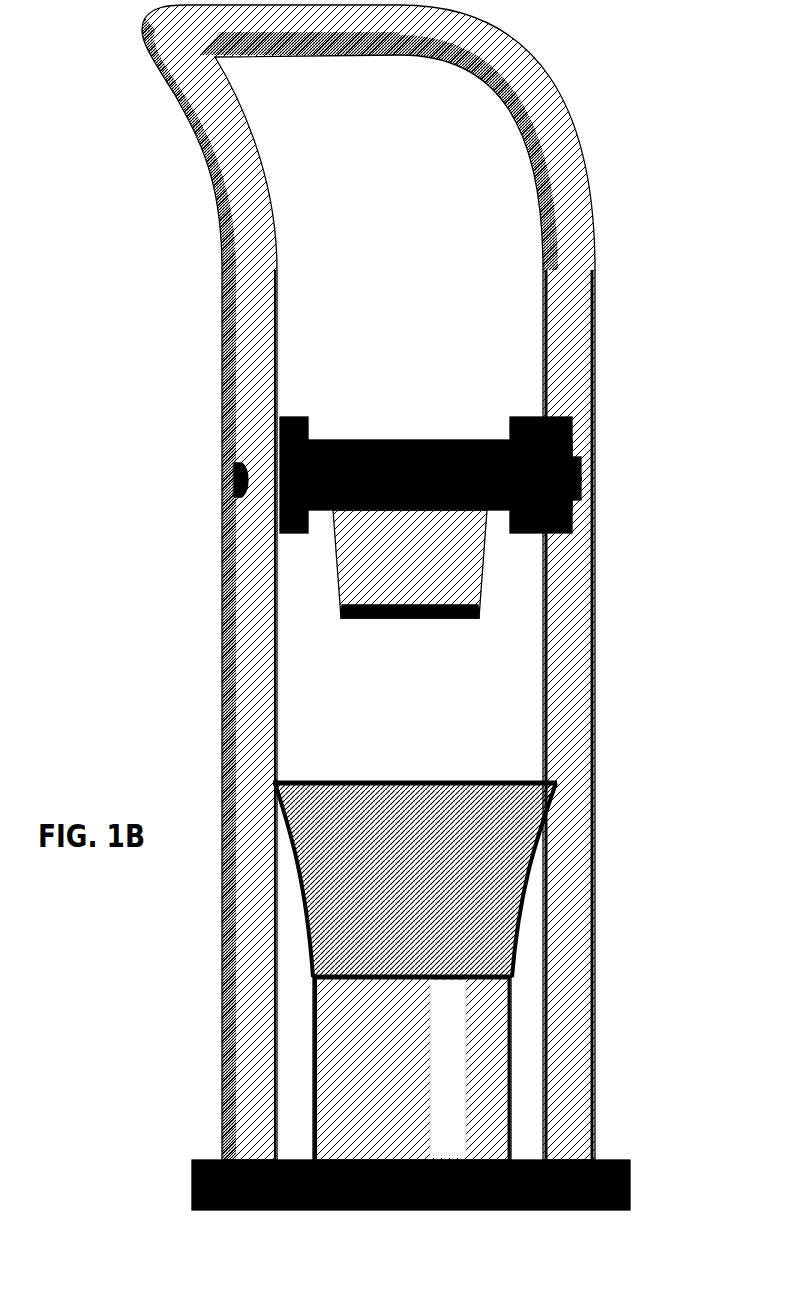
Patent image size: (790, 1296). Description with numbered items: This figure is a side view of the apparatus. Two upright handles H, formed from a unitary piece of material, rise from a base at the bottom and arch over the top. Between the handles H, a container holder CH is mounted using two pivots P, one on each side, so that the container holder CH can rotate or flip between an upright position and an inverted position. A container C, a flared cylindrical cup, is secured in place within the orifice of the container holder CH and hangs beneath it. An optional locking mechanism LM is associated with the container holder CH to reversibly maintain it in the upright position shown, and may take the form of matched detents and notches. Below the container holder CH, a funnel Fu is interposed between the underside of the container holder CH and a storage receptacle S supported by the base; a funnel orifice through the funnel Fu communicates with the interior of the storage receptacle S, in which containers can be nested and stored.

The handle H is at (267, 748).
The container holder CH is at (393, 448).
The locking mechanism LM is at (520, 418).
The pivot P is at (234, 479).
The container C is at (428, 576).
The funnel Fu is at (428, 884).
The storage receptacle S is at (412, 1108).